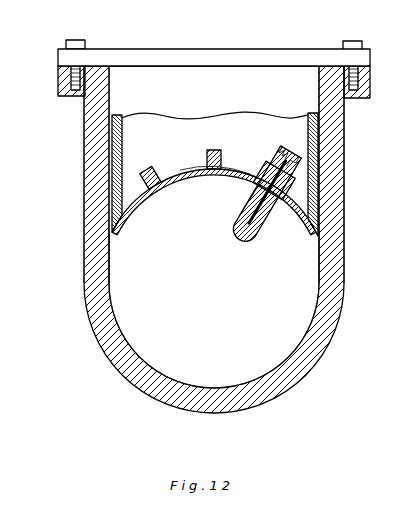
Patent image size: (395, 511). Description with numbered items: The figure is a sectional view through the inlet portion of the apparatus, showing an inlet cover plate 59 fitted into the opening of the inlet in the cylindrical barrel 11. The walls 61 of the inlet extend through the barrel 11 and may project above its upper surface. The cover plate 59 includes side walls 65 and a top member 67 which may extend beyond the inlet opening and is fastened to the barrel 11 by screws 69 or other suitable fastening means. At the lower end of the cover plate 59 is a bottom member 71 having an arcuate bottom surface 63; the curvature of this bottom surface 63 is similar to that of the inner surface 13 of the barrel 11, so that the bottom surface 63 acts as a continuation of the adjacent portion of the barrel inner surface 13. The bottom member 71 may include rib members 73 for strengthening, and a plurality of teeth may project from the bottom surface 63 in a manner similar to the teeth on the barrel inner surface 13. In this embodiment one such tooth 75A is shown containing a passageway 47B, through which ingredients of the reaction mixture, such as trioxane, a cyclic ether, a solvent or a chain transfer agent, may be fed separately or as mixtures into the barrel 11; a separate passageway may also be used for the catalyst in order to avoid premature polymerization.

The cylindrical barrel 11 is at (92, 337).
The inner surface of the barrel 13 is at (120, 325).
The walls of the inlet 61 is at (84, 184).
The screws 69 is at (79, 40).
The top member 67 is at (219, 49).
The side walls 65 is at (126, 131).
The arcuate bottom surface 63 is at (177, 183).
The cover plate 59 is at (189, 168).
The bottom member 71 is at (239, 169).
The rib members 73 is at (158, 175).
The passageway 47B is at (240, 228).
The tooth 75A is at (259, 227).